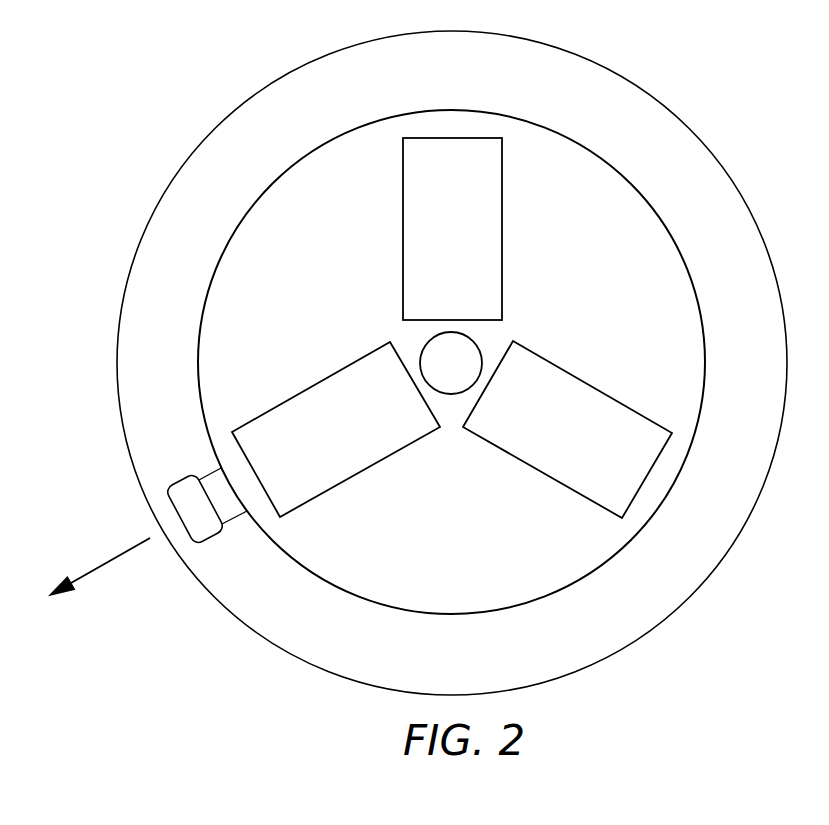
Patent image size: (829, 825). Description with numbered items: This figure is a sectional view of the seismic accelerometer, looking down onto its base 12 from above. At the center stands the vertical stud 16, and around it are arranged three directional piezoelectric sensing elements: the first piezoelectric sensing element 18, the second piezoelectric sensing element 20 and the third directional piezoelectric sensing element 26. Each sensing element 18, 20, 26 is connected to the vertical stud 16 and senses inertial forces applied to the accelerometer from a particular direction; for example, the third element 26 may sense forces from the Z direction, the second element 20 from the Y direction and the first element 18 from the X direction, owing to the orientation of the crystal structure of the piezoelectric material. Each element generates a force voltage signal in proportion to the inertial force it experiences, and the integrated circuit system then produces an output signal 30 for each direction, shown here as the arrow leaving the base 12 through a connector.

The base 12 is at (695, 133).
The vertical stud 16 is at (420, 348).
The first directional piezoelectric sensing element 18 is at (582, 378).
The second directional piezoelectric sensing element 20 is at (338, 485).
The third directional piezoelectric sensing element 26 is at (502, 228).
The output signal 30 is at (98, 568).